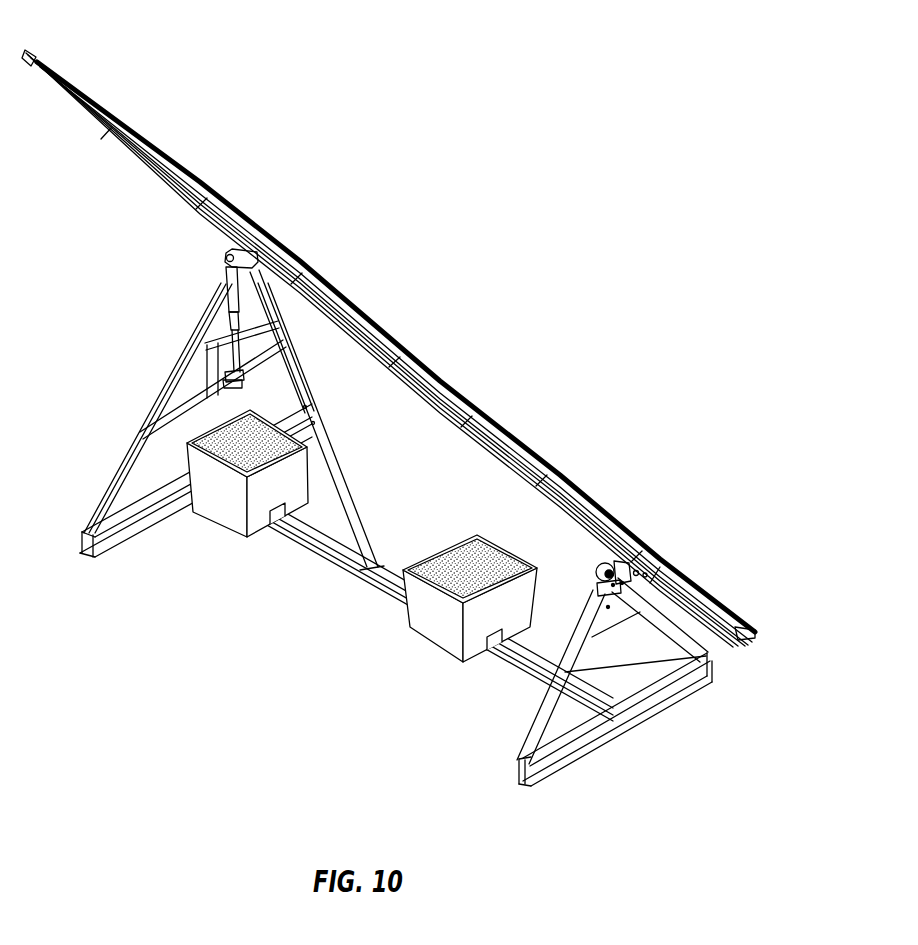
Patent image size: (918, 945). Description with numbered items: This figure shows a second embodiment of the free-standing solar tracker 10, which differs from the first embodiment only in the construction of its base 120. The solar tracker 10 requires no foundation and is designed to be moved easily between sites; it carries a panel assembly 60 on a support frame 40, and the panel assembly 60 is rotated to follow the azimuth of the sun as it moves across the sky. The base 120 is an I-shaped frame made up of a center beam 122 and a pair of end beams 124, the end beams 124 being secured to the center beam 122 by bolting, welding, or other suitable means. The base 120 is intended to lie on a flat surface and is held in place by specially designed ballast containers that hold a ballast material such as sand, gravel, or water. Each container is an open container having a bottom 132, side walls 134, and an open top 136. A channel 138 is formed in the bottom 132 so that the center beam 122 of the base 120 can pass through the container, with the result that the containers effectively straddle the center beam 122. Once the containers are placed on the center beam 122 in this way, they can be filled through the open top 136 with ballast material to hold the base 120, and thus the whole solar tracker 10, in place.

The solar tracker 10 is at (497, 274).
The support frame 40 is at (130, 406).
The panel assembly 60 is at (152, 118).
The base 120 is at (655, 730).
The center beam 122 is at (353, 563).
The end beam 124 is at (118, 531).
The bottom 132 is at (233, 532).
The side walls 134 is at (216, 498).
The open top 136 is at (249, 447).
The channel 138 is at (280, 517).